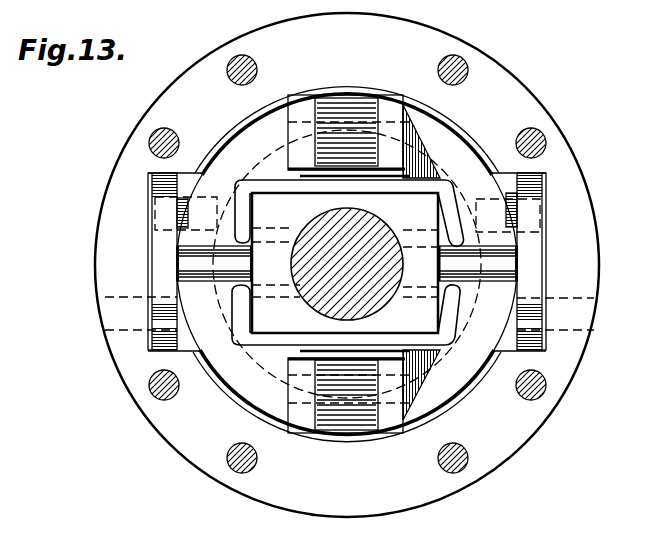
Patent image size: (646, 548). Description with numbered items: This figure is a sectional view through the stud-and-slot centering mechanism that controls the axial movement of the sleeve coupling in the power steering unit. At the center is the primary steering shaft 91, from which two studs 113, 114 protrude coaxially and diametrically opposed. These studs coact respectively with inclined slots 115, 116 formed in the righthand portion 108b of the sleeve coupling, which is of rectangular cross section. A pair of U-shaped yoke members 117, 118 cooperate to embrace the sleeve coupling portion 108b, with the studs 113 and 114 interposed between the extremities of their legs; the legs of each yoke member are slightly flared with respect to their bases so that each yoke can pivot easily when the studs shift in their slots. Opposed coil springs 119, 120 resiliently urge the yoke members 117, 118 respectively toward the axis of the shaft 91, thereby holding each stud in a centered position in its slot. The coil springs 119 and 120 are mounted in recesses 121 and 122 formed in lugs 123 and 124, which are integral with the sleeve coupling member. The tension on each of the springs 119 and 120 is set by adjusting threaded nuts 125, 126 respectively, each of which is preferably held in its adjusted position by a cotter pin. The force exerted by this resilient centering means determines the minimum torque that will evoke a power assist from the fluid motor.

The primary steering shaft 91 is at (309, 222).
The righthand portion of the sleeve coupling 108b is at (274, 321).
The stud 113 is at (195, 260).
The stud 114 is at (507, 263).
The inclined slot 115 is at (240, 294).
The inclined slot 116 is at (461, 303).
The U-shaped yoke member 117 is at (421, 178).
The U-shaped yoke member 118 is at (456, 335).
The coil spring 119 is at (357, 172).
The coil spring 120 is at (270, 368).
The recess 121 is at (299, 143).
The recess 122 is at (418, 370).
The lug 123 is at (296, 117).
The lug 124 is at (302, 418).
The threaded nut 125 is at (352, 95).
The threaded nut 126 is at (345, 434).